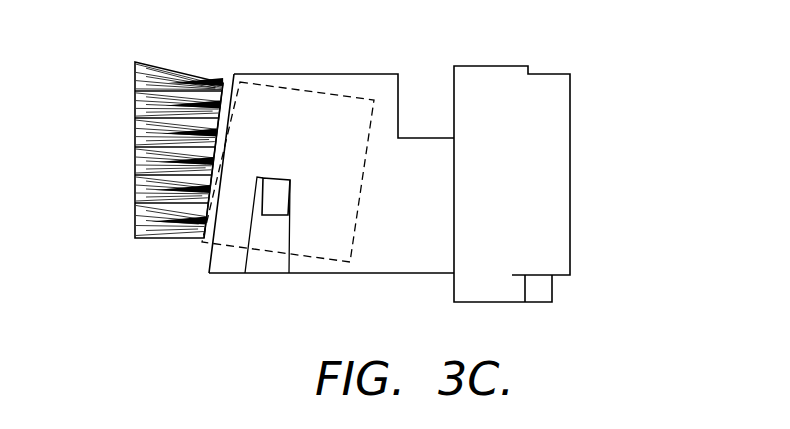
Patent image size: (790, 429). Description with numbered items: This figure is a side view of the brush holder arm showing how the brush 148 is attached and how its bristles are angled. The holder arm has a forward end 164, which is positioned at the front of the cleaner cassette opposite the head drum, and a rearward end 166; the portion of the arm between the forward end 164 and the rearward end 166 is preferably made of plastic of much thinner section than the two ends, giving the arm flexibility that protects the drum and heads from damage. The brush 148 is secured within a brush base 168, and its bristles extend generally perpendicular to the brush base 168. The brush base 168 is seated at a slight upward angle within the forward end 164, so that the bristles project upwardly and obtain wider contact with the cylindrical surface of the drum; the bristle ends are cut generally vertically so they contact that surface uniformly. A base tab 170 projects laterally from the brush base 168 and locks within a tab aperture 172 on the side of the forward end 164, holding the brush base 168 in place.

The brush 148 is at (141, 146).
The forward end 164 is at (285, 78).
The rearward end 166 is at (537, 200).
The brush base 168 is at (208, 244).
The base tab 170 is at (278, 203).
The tab aperture 172 is at (251, 237).